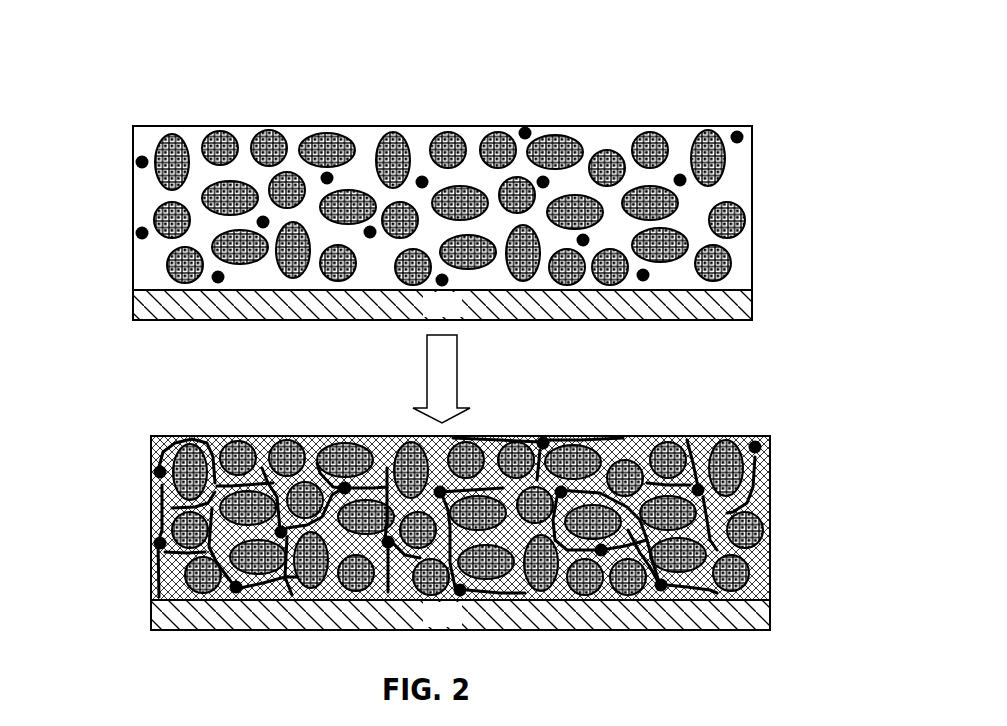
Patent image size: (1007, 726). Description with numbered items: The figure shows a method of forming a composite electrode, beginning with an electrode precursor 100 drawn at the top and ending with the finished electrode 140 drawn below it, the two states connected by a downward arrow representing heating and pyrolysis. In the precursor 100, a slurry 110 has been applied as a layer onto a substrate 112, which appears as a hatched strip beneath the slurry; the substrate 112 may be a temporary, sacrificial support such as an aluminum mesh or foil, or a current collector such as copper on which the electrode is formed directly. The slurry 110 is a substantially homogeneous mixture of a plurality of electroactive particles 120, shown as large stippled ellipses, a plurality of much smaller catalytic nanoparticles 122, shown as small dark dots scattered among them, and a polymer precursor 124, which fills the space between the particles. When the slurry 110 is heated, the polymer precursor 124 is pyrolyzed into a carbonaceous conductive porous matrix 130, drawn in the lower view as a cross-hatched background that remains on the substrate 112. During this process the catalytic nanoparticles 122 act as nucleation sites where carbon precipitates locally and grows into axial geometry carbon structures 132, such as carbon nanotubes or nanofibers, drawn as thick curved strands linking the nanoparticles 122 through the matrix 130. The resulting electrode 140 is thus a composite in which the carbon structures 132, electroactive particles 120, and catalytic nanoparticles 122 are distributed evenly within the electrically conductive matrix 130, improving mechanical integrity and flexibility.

The electrode precursor 100 is at (104, 61).
The slurry 110 is at (131, 127).
The substrate 112 is at (458, 314).
The electroactive particles 120 is at (172, 140).
The catalytic nanoparticles 122 is at (682, 173).
The polymer precursor 124 is at (725, 185).
The carbonaceous conductive porous matrix 130 is at (768, 497).
The axial geometry carbon structures 132 is at (208, 438).
The electrode 140 is at (146, 437).